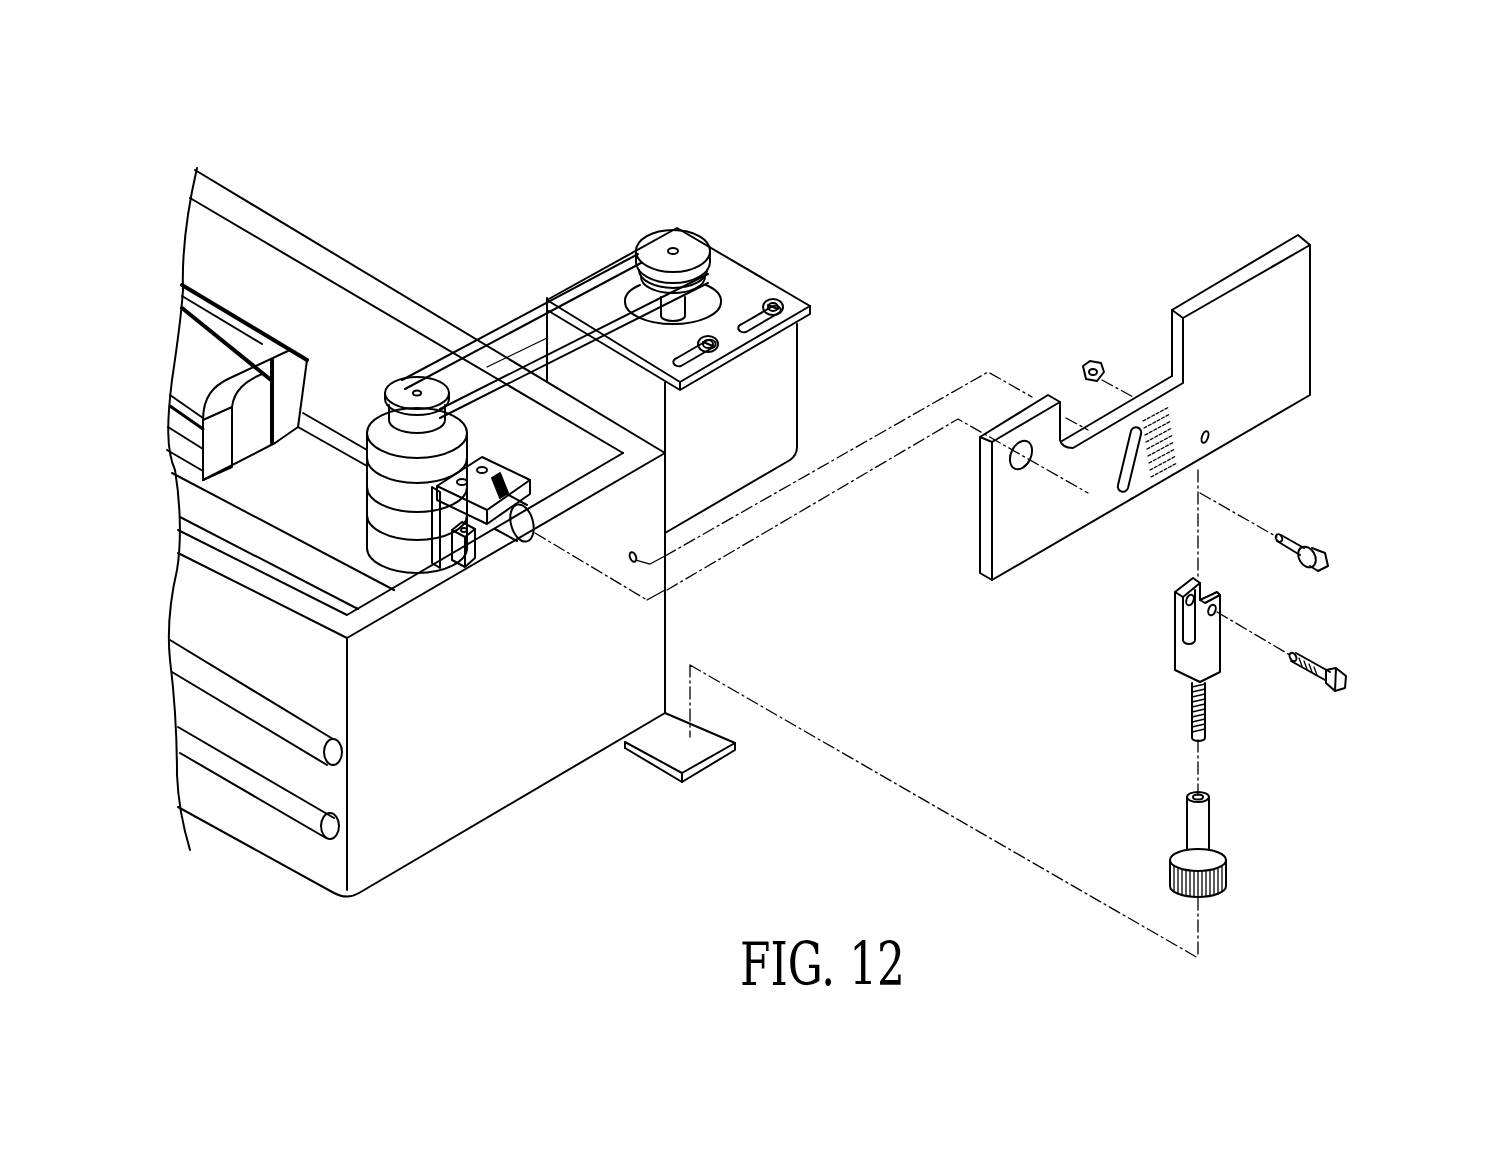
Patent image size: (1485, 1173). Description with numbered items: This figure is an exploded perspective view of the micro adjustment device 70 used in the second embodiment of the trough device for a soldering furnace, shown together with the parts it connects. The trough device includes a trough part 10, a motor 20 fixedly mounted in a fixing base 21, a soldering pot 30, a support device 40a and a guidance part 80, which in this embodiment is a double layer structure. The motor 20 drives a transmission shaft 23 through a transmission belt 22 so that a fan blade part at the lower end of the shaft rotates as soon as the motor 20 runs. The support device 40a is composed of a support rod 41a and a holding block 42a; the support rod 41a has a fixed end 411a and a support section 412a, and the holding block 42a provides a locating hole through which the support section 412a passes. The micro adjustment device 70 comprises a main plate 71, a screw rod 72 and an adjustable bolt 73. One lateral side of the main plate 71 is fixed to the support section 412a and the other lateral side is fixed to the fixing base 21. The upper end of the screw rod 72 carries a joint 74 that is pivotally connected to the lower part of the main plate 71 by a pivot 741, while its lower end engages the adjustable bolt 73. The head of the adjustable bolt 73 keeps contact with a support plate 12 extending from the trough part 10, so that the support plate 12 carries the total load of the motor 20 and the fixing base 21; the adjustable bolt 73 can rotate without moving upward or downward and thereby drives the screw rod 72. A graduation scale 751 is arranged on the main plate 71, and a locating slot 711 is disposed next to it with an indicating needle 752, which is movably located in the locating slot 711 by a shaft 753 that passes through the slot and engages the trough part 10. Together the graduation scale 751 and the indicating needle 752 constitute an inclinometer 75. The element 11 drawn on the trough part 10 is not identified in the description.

The trough part 10 is at (283, 848).
The guide rods 11 is at (219, 767).
The support plate 12 is at (653, 768).
The motor 20 is at (674, 238).
The fixing base 21 is at (755, 277).
The transmission belt 22 is at (515, 328).
The transmission shaft 23 is at (417, 384).
The soldering pot 30 is at (341, 438).
The support device 40a is at (483, 712).
The support rod 41a is at (498, 542).
The holding block 42a is at (461, 574).
The fixed end 411a is at (433, 563).
The support section 412a is at (527, 546).
The micro adjustment device 70 is at (1223, 566).
The main plate 71 is at (1190, 408).
The screw rod 72 is at (1192, 710).
The adjustable bolt 73 is at (1210, 834).
The joint 74 is at (1175, 655).
The inclinometer 75 is at (1274, 499).
The guidance part 80 is at (249, 315).
The locating slot 711 is at (1137, 497).
The pivot 741 is at (1312, 674).
The graduation scale 751 is at (1168, 420).
The indicating needle 752 is at (1333, 549).
The shaft 753 is at (1293, 536).